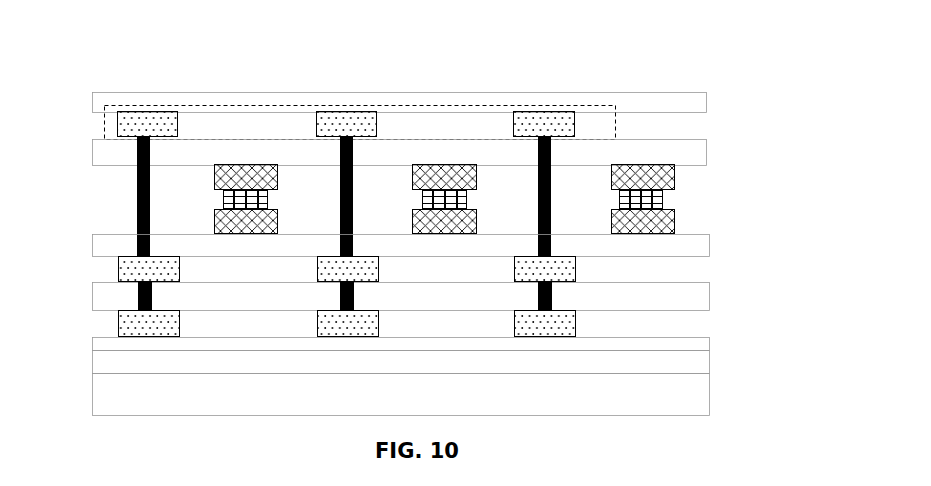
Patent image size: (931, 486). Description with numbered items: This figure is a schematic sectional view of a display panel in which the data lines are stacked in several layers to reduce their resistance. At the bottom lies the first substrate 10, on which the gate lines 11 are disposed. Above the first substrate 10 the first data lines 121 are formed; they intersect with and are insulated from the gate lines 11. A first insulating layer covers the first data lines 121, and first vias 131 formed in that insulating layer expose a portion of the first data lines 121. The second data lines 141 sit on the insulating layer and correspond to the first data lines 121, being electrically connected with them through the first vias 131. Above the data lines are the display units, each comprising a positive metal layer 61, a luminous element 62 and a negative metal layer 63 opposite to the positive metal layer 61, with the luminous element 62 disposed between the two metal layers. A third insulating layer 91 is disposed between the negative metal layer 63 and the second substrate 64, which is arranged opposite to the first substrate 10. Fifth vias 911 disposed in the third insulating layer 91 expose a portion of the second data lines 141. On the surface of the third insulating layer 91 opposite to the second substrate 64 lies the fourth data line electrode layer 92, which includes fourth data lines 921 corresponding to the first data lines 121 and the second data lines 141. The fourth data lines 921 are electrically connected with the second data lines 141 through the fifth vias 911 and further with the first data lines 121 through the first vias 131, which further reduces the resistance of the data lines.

The first substrate 10 is at (702, 394).
The gate lines 11 is at (700, 360).
The first data lines 121 is at (145, 322).
The first vias 131 is at (138, 298).
The second data lines 141 is at (145, 268).
The positive metal layer 61 is at (675, 226).
The luminous element 62 is at (663, 204).
The negative metal layer 63 is at (675, 180).
The third insulating layer 91 is at (697, 148).
The fifth vias 911 is at (137, 152).
The fourth data line electrode layer 92 is at (615, 122).
The fourth data lines 921 is at (118, 126).
The second substrate 64 is at (698, 96).